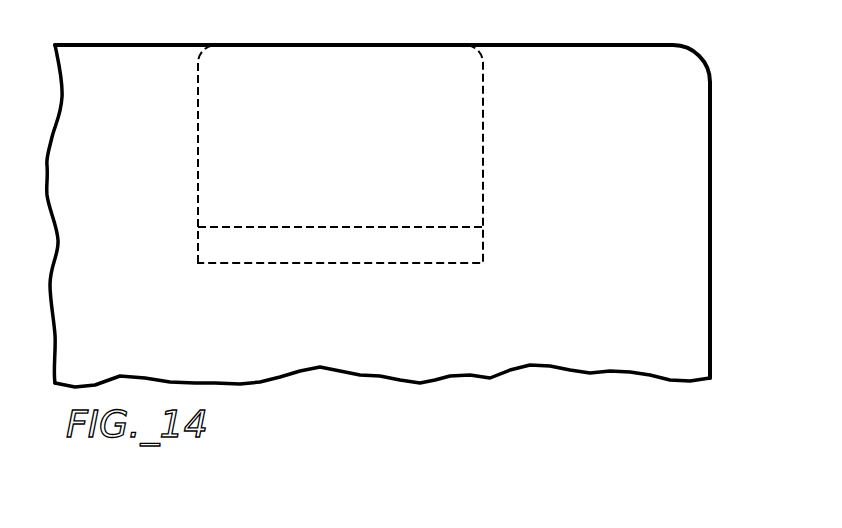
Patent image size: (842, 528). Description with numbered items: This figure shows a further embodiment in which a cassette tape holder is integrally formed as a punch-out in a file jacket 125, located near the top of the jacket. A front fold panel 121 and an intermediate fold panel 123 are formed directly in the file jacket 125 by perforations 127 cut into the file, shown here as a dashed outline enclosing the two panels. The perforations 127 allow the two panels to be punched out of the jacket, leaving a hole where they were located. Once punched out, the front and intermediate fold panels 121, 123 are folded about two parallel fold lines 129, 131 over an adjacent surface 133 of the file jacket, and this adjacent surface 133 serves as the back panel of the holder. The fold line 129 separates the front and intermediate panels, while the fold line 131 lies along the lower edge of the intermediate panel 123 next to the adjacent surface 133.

The front fold panel 121 is at (473, 140).
The intermediate fold panel 123 is at (473, 252).
The file jacket 125 is at (701, 121).
The perforations 127 is at (483, 86).
The fold line 129 is at (349, 226).
The fold line 131 is at (470, 263).
The adjacent surface 133 is at (432, 304).